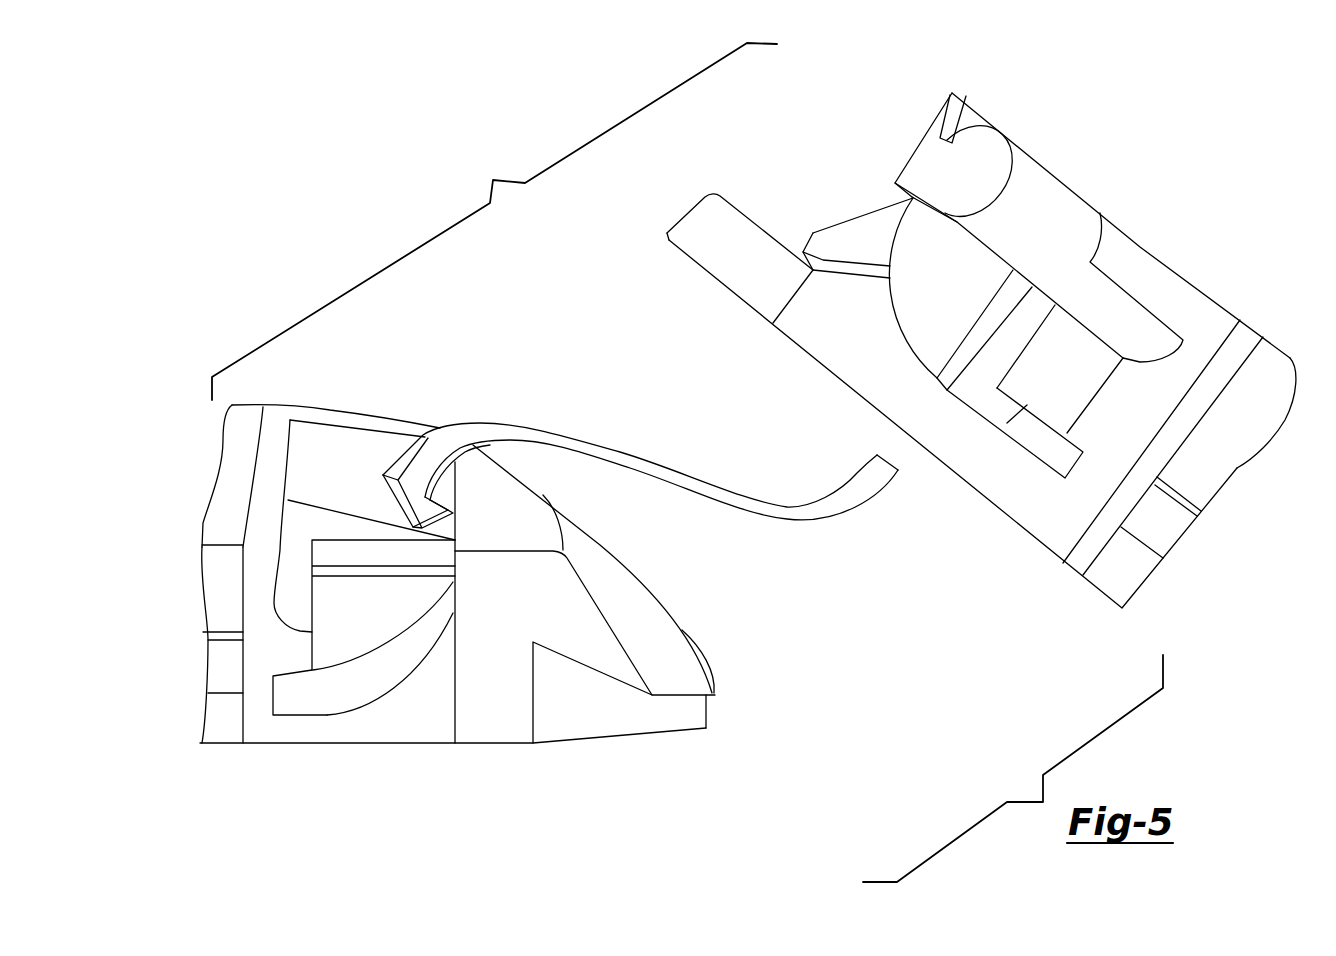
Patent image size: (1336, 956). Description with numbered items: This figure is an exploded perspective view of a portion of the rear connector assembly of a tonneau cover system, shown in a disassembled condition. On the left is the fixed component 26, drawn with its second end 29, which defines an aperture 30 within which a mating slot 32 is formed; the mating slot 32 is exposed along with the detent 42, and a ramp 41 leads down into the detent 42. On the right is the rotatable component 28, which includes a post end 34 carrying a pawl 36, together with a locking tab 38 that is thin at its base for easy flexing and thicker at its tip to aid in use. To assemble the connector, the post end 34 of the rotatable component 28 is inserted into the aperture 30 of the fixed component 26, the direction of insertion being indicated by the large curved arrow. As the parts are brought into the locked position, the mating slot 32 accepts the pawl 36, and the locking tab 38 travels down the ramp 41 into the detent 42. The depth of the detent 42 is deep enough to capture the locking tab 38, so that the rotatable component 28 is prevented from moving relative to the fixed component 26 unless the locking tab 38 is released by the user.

The fixed component 26 is at (413, 743).
The rotatable component 28 is at (1213, 490).
The second end 29 is at (350, 632).
The aperture 30 is at (300, 537).
The mating slot 32 is at (350, 547).
The post end 34 is at (1053, 195).
The pawl 36 is at (922, 347).
The locking tab 38 is at (752, 240).
The ramp 41 is at (537, 643).
The detent 42 is at (622, 682).